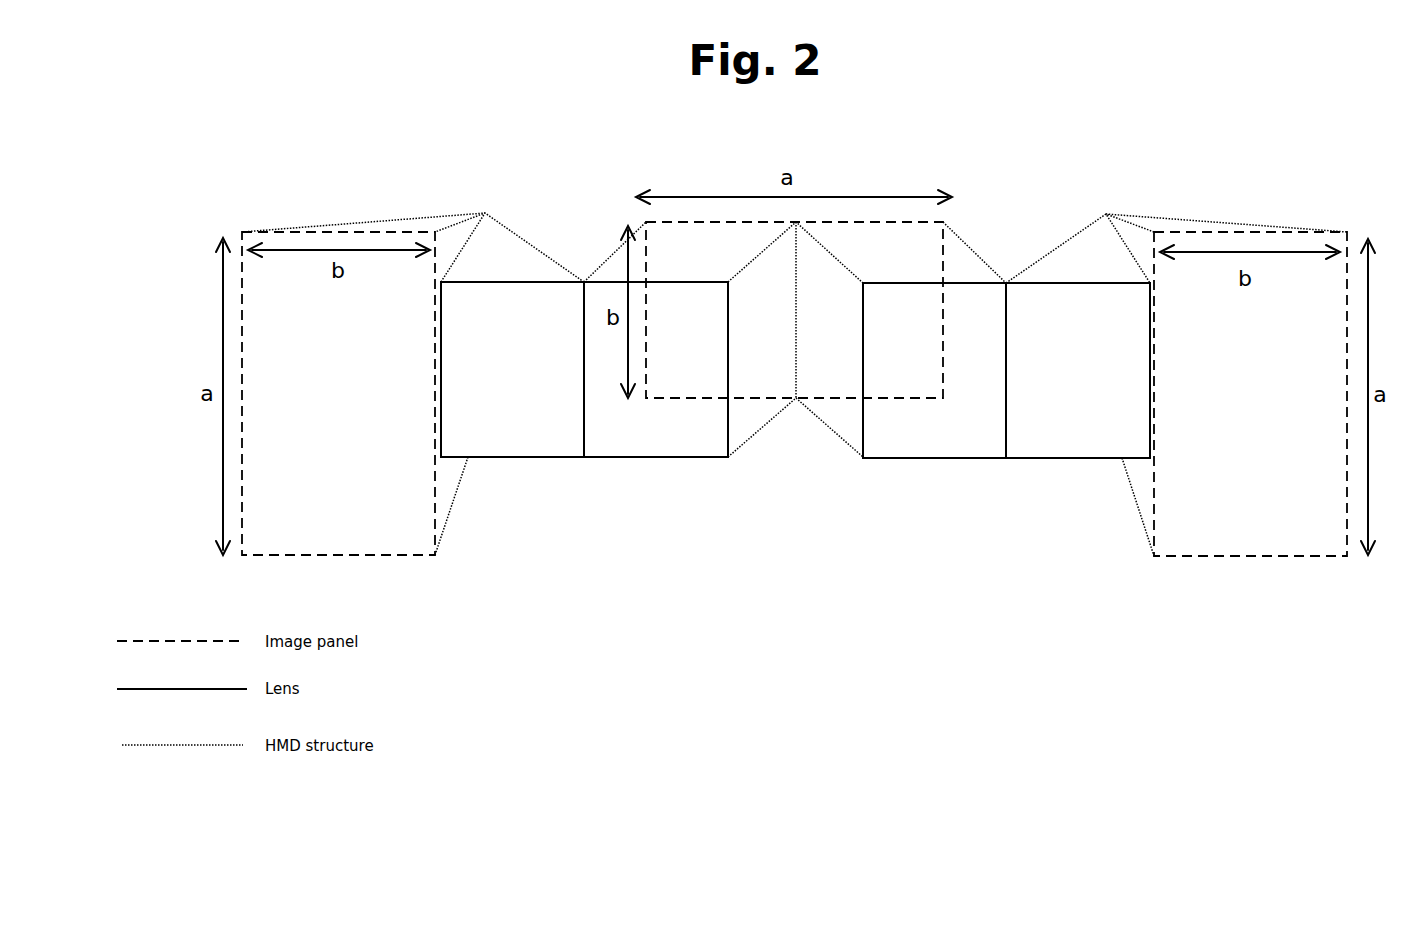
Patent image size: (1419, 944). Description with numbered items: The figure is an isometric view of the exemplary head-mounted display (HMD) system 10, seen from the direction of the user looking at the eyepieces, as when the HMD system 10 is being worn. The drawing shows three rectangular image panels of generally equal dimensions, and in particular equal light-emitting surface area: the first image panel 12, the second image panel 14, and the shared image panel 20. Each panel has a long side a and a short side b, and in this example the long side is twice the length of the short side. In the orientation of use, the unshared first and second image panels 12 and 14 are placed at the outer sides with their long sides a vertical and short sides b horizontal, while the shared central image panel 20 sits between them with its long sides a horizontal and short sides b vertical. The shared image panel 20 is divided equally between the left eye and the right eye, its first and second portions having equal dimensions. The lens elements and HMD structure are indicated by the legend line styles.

The head-mounted display (HMD) system 10 is at (751, 541).
The first image panel 12 is at (415, 555).
The second image panel 14 is at (1258, 557).
The shared image panel 20 is at (743, 227).